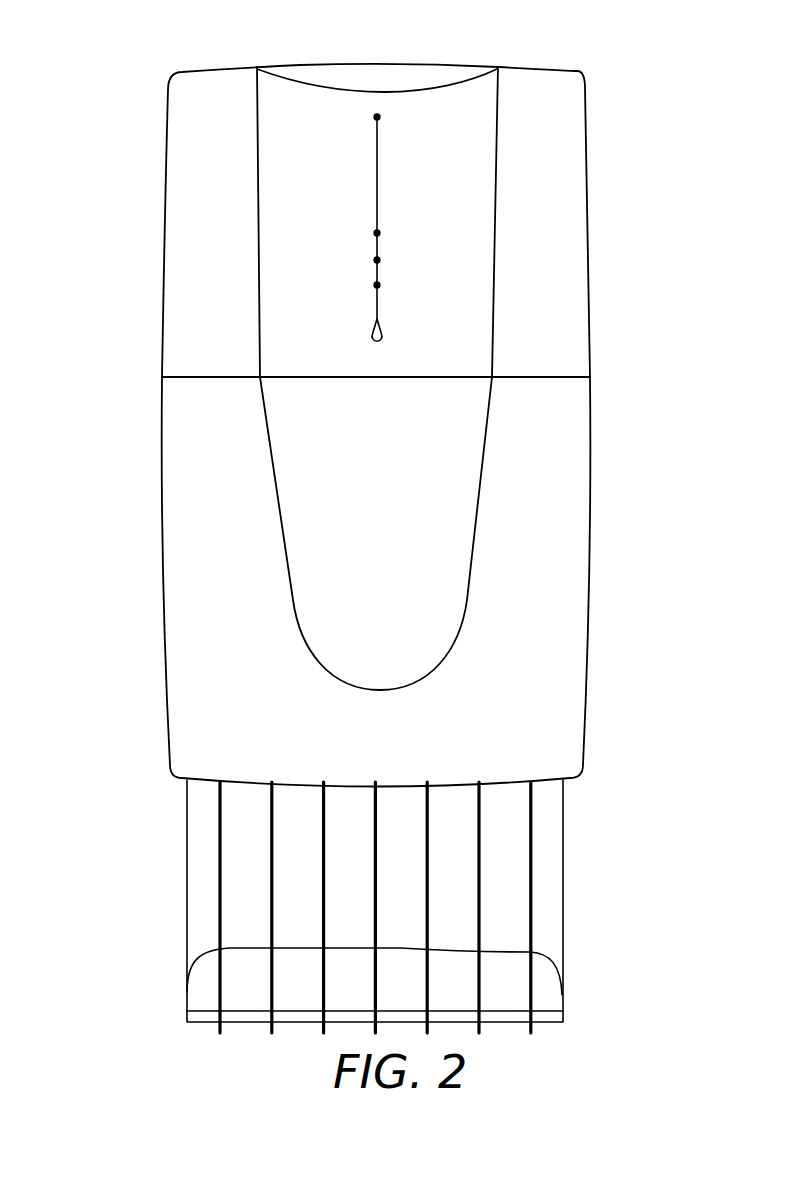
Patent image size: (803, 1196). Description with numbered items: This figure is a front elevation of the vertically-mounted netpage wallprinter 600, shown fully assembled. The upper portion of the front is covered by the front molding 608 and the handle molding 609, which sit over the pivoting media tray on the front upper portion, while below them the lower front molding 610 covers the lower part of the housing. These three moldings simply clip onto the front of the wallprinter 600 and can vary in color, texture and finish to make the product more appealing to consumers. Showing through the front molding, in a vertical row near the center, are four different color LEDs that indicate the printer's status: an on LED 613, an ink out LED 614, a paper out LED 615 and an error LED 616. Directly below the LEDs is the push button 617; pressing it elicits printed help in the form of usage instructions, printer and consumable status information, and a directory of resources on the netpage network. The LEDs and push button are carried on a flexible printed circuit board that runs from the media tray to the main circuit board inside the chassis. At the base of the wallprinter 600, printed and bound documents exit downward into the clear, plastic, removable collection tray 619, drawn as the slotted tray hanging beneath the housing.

The wallprinter 600 is at (615, 610).
The front molding 608 is at (188, 218).
The handle molding 609 is at (437, 78).
The lower front molding 610 is at (188, 570).
The LED 613 is at (380, 117).
The LED 614 is at (378, 233).
The LED 615 is at (378, 260).
The LED 616 is at (378, 285).
The push button 617 is at (382, 335).
The collection tray 619 is at (205, 893).